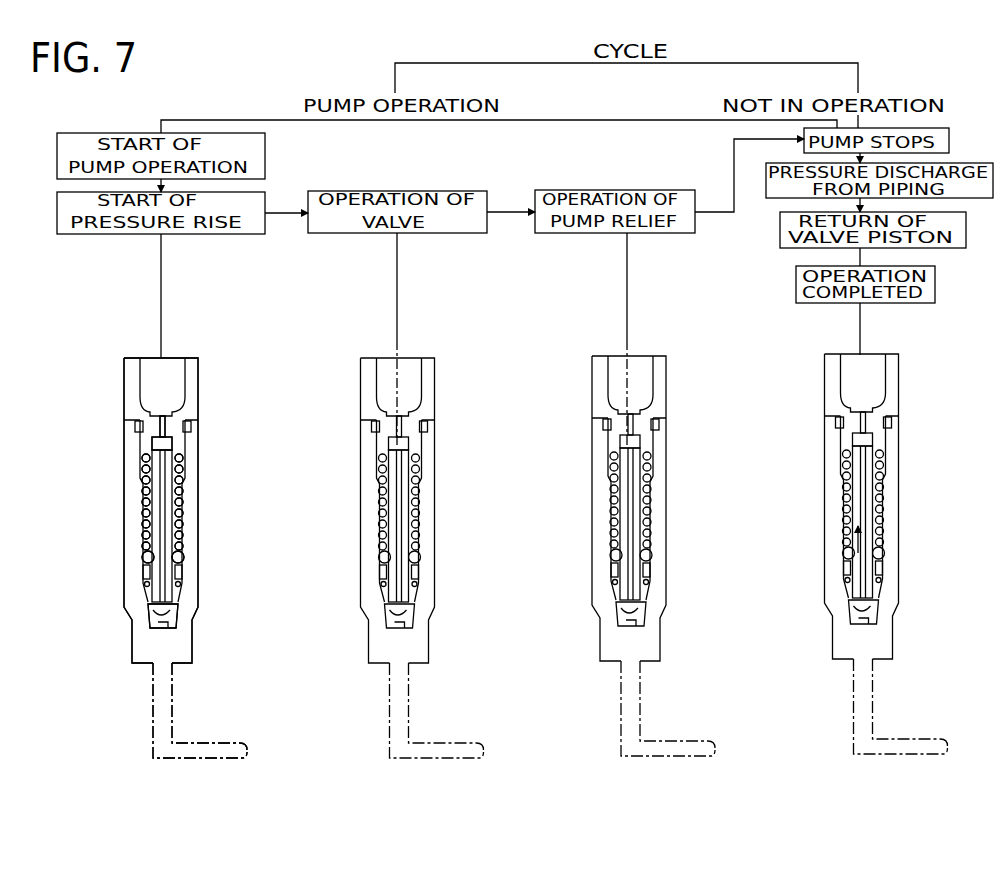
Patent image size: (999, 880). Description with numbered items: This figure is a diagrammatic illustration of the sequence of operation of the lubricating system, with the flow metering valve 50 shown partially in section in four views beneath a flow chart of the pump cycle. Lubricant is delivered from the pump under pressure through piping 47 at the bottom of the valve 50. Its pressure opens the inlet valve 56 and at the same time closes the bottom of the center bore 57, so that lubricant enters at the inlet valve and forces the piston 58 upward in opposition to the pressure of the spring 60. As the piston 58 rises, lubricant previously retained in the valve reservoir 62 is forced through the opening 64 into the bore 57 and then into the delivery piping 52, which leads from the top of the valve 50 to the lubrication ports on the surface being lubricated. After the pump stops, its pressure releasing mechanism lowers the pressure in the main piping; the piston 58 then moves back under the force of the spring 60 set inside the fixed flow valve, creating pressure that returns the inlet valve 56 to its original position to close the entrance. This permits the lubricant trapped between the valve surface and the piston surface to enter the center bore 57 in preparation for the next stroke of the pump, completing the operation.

The piping 47 is at (234, 742).
The flow metering valve 50 is at (115, 375).
The delivery piping 52 is at (402, 321).
The inlet valve 56 is at (178, 625).
The center bore 57 is at (167, 420).
The piston 58 is at (190, 576).
The spring 60 is at (180, 498).
The valve reservoir 62 is at (143, 487).
The opening 64 is at (172, 447).